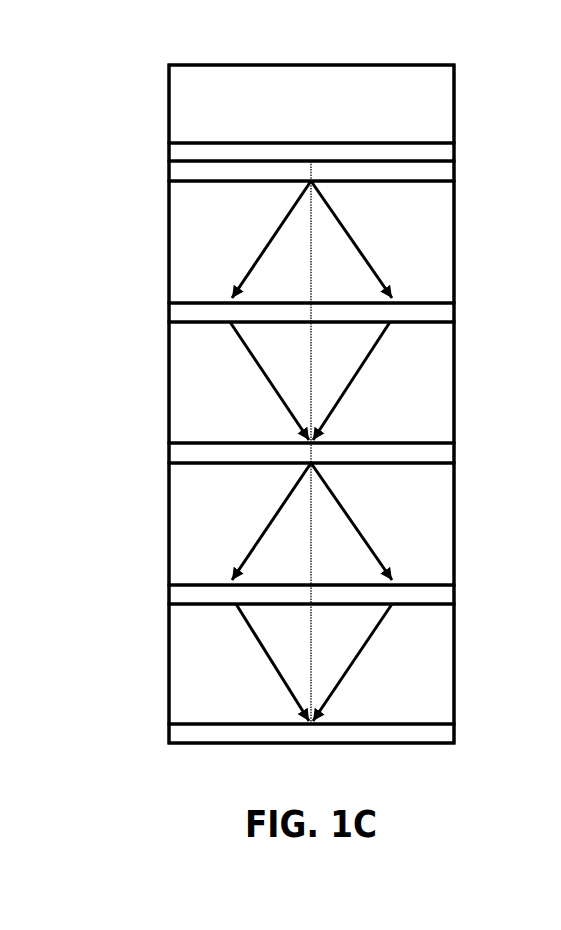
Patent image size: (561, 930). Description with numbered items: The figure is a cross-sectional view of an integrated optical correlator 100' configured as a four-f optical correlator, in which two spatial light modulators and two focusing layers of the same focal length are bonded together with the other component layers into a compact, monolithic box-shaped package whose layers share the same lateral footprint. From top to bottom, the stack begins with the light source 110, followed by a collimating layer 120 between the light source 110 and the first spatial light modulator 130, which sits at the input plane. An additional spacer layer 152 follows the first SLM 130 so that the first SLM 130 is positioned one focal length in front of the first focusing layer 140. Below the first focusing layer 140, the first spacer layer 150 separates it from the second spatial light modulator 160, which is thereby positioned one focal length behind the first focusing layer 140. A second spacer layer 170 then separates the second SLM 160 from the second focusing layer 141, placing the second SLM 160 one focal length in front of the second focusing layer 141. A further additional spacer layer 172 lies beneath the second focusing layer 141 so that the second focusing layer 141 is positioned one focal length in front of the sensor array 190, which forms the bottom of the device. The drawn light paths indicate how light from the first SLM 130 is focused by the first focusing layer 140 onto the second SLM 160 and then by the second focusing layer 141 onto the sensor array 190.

The integrated optical correlator 100' is at (255, 400).
The light source 110 is at (454, 105).
The collimating layer 120 is at (454, 152).
The first spatial light modulator 130 is at (454, 172).
The spacer layer 152 is at (454, 241).
The first focusing layer 140 is at (454, 312).
The first spacer layer 150 is at (454, 383).
The second spatial light modulator 160 is at (454, 453).
The second spacer layer 170 is at (454, 526).
The second focusing layer 141 is at (454, 594).
The spacer layer 172 is at (454, 663).
The sensor array 190 is at (454, 733).